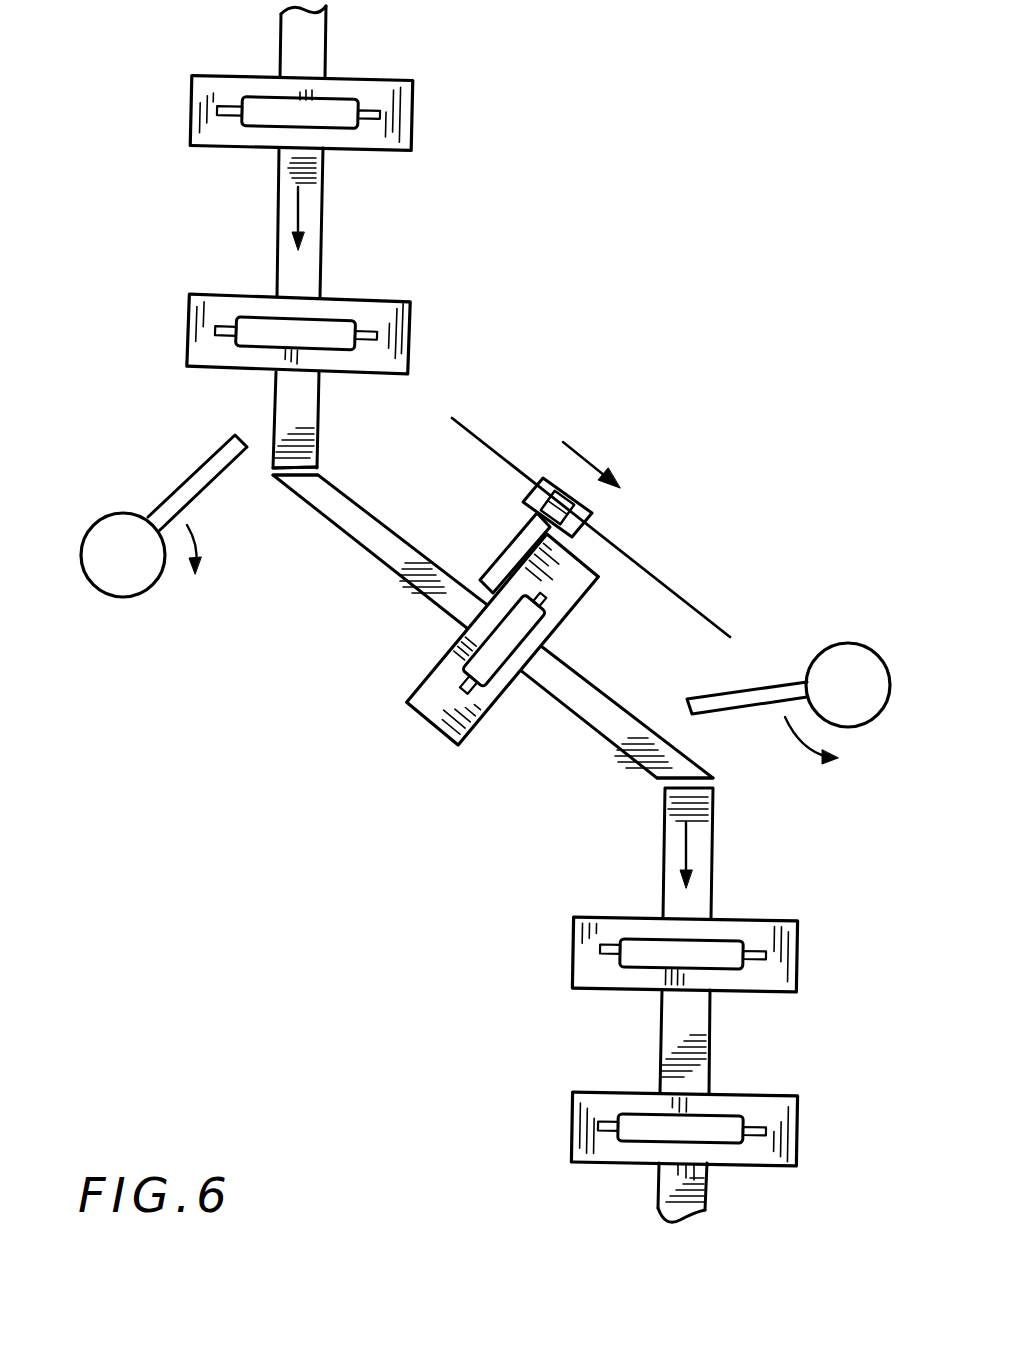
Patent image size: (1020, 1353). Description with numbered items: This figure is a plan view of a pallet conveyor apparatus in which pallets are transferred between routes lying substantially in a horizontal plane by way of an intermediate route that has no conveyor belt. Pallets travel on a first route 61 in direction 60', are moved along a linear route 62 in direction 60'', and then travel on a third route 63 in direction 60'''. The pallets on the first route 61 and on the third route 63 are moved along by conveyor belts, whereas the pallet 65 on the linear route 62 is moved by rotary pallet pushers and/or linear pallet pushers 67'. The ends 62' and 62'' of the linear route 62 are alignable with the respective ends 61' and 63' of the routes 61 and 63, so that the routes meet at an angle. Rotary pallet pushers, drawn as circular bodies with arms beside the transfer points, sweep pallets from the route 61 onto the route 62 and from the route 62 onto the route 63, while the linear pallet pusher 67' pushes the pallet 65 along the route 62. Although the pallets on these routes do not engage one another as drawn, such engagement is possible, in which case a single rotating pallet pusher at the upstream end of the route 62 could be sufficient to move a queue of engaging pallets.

The direction 60' is at (349, 218).
The direction 60'' is at (591, 520).
The direction 60''' is at (740, 855).
The route 61 is at (330, 234).
The end of route 61 61' is at (258, 428).
The linear route 62 is at (493, 626).
The end of route 62 62' is at (333, 464).
The end of route 62 62'' is at (647, 789).
The route 63 is at (722, 1134).
The end of route 63 63' is at (724, 850).
The pallet 65 is at (430, 718).
The linear pallet pushers 67' is at (505, 535).